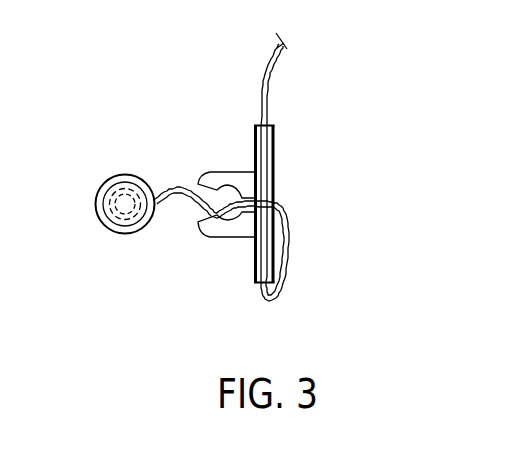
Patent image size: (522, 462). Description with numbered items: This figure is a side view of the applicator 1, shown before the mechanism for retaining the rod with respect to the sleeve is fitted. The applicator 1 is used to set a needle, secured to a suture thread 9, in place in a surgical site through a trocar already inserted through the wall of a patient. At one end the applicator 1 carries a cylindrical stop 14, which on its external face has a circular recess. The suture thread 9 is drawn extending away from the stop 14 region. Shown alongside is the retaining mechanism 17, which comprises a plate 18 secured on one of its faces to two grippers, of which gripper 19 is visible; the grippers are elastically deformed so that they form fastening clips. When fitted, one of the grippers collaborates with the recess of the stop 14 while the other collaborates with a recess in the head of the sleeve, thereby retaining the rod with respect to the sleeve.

The applicator 1 is at (255, 315).
The suture thread 9 is at (185, 189).
The cylindrical stop 14 is at (108, 181).
The retaining mechanism 17 is at (352, 218).
The plate 18 is at (275, 152).
The gripper 19 is at (235, 230).